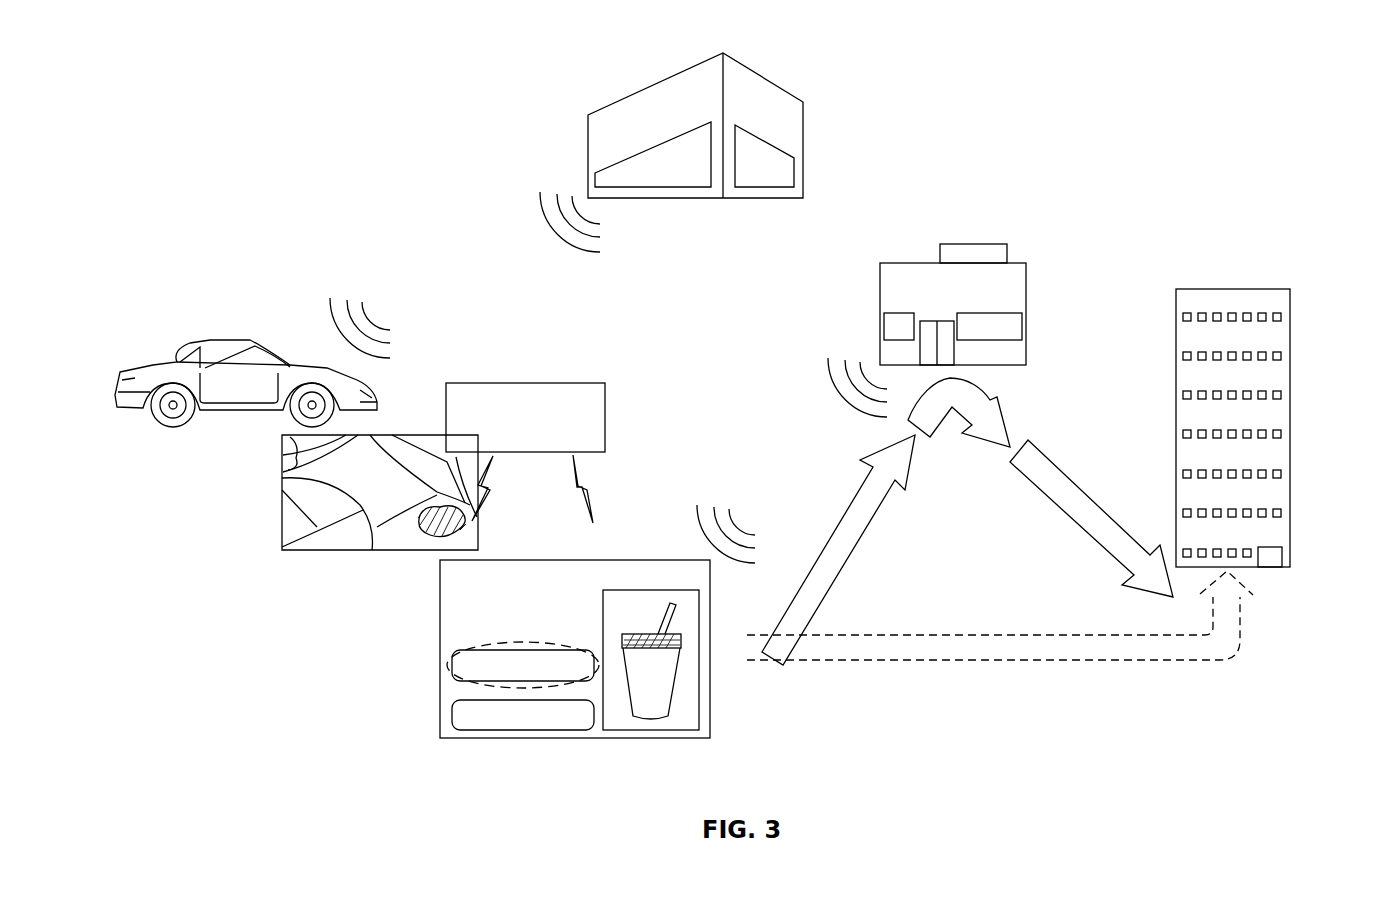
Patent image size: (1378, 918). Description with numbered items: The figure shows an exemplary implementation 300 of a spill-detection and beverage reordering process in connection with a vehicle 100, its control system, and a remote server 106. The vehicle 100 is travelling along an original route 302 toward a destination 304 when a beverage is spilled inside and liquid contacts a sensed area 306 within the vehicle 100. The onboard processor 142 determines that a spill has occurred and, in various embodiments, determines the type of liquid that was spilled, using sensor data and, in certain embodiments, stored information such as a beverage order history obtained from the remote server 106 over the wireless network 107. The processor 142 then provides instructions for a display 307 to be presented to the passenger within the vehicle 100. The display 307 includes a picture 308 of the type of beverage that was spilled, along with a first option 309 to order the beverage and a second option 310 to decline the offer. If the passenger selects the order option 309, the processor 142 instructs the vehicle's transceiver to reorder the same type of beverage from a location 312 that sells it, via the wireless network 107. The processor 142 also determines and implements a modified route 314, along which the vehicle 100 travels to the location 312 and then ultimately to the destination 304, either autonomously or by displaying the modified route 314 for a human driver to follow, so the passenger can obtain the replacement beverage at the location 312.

The implementation 300 is at (311, 112).
The vehicle 100 is at (216, 340).
The wireless network 107 is at (378, 318).
The remote server 106 is at (657, 83).
The processor 142 is at (590, 383).
The sensed area 306 is at (428, 540).
The display 307 is at (533, 756).
The picture 308 is at (688, 710).
The first option 309 is at (450, 662).
The second option 310 is at (450, 706).
The location 312 is at (975, 244).
The destination 304 is at (1292, 338).
The modified route 314 is at (852, 508).
The original route 302 is at (1135, 665).